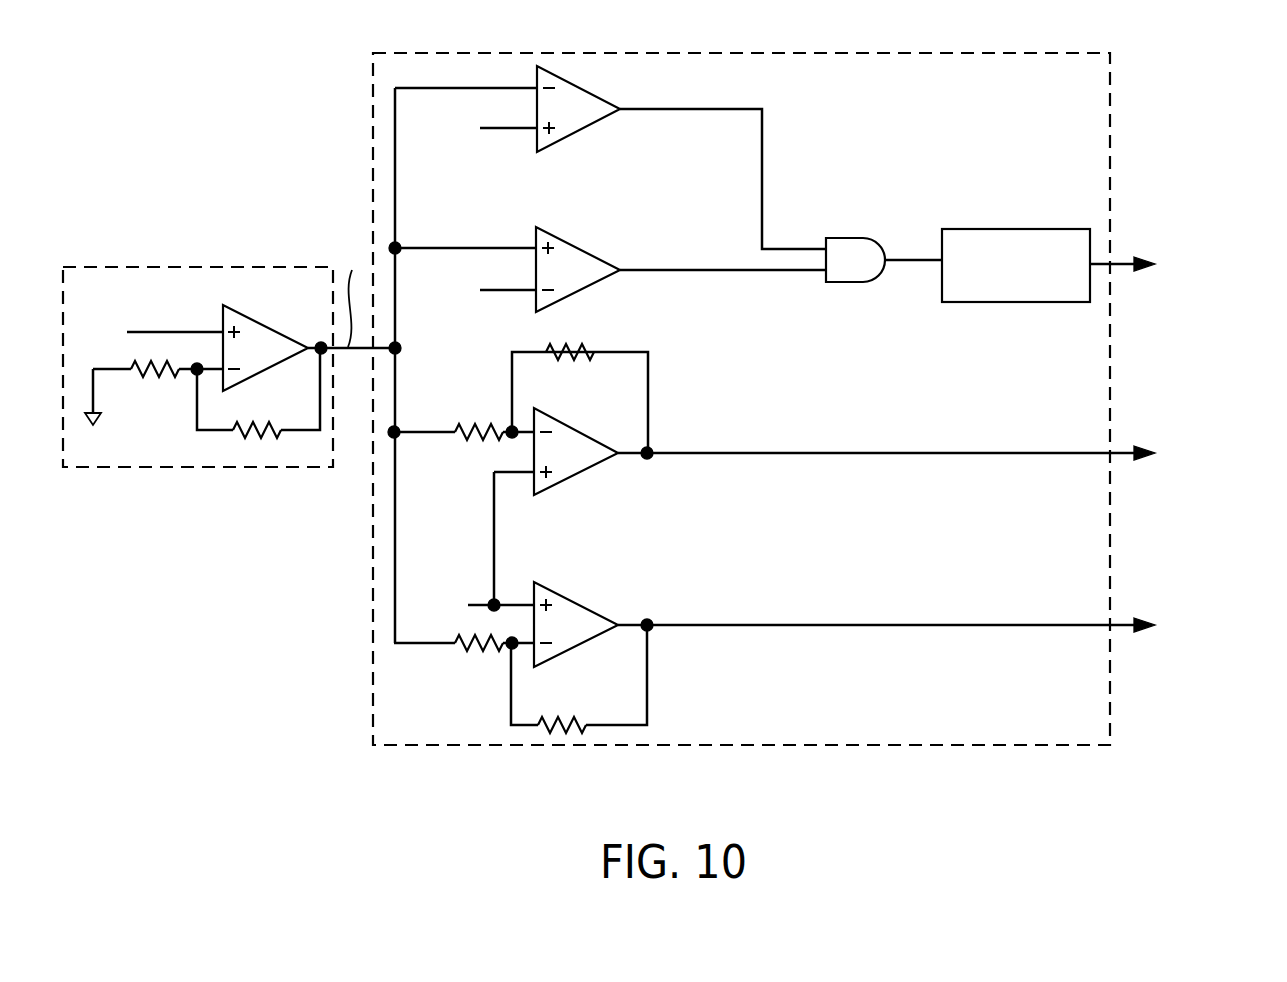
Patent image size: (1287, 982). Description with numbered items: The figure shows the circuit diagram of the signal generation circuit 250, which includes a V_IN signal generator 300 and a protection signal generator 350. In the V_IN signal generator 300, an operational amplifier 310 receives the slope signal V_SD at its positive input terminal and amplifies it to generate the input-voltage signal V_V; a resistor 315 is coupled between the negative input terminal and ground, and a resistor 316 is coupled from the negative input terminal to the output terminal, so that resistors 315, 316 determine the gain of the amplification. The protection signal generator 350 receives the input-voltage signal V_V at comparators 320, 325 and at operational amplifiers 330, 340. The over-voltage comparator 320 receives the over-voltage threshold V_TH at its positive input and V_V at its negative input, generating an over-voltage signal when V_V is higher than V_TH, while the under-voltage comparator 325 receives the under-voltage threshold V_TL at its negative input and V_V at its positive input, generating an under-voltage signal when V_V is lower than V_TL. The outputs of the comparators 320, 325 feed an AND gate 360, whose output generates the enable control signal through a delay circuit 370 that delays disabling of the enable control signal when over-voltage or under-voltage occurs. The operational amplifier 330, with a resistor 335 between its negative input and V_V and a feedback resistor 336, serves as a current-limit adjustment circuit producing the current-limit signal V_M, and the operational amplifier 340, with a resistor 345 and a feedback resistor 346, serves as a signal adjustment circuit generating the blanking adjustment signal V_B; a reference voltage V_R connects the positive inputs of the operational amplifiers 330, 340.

The signal generation circuit 250 is at (1286, 82).
The V_IN signal generator 300 is at (148, 267).
The operational amplifier 310 is at (253, 317).
The resistor 315 is at (160, 387).
The resistor 316 is at (262, 447).
The over-voltage comparator 320 is at (600, 122).
The under-voltage comparator 325 is at (583, 248).
The operational amplifier 330 is at (590, 467).
The resistor 335 is at (462, 445).
The resistor 336 is at (580, 347).
The operational amplifier 340 is at (578, 600).
The resistor 345 is at (462, 650).
The resistor 346 is at (560, 720).
The protection signal generator 350 is at (1110, 168).
The AND gate 360 is at (868, 235).
The delay circuit 370 is at (993, 228).